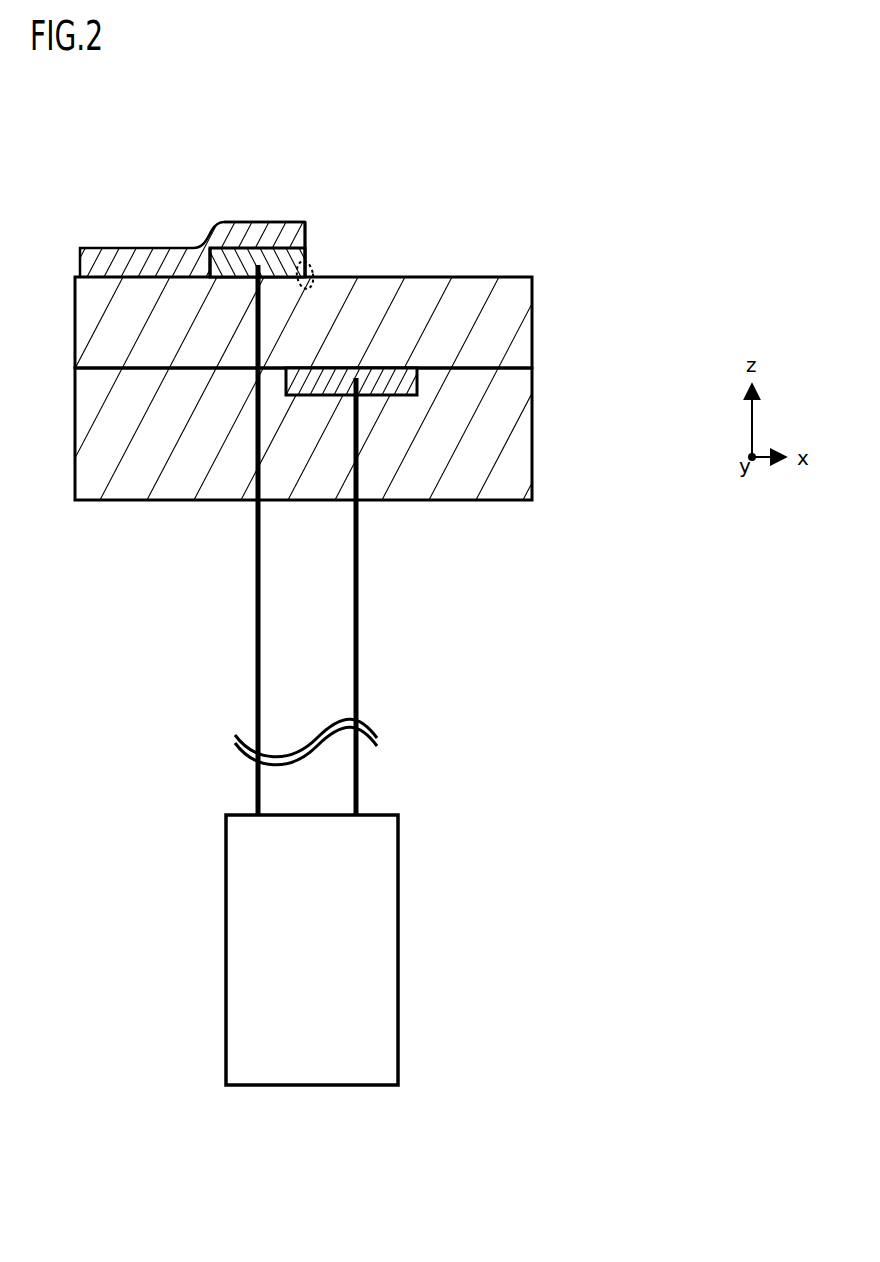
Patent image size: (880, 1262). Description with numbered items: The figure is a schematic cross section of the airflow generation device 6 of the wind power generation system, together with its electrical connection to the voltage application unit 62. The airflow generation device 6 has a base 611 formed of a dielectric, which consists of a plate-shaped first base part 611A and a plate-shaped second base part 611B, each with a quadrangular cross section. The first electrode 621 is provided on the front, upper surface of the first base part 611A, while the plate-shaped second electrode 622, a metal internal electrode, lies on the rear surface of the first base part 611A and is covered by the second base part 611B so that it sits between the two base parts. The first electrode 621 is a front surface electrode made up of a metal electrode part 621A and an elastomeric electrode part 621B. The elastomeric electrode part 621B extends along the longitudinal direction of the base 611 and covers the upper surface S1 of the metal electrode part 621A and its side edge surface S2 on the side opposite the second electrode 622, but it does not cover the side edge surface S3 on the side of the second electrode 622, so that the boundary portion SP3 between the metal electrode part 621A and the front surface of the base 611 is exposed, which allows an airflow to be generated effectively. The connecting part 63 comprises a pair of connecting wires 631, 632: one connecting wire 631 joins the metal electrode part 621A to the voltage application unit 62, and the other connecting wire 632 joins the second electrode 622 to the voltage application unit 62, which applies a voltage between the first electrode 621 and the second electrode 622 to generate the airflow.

The airflow generation device 6 is at (323, 118).
The base 611 is at (604, 303).
The first base part 611A is at (520, 323).
The second base part 611B is at (520, 435).
The first electrode 621 is at (315, 131).
The metal electrode part 621A is at (286, 262).
The elastomeric electrode part 621B is at (137, 258).
The second electrode 622 is at (391, 377).
The upper surface S1 is at (237, 246).
The side edge surface S2 is at (207, 264).
The side edge surface S3 is at (305, 254).
The boundary portion SP3 is at (314, 268).
The connecting part 63 is at (175, 590).
The connecting wire 631 is at (258, 676).
The connecting wire 632 is at (357, 622).
The voltage application unit 62 is at (235, 950).